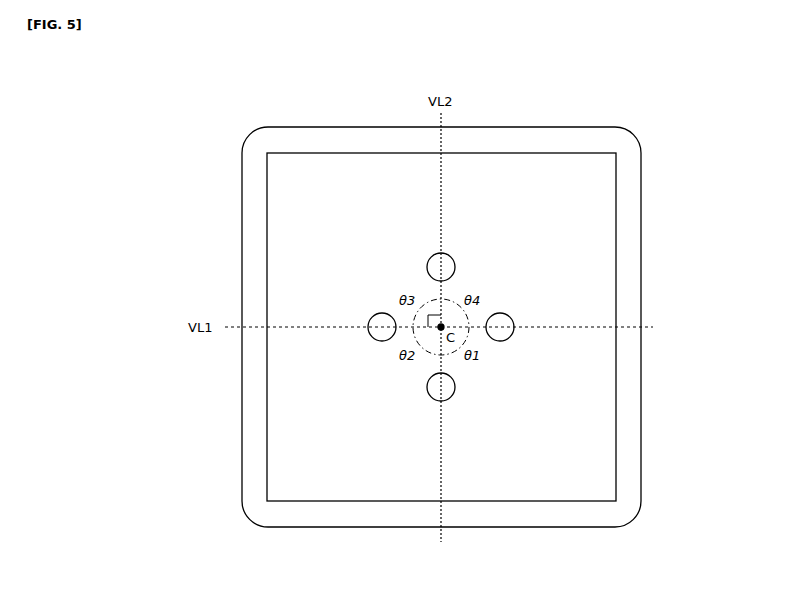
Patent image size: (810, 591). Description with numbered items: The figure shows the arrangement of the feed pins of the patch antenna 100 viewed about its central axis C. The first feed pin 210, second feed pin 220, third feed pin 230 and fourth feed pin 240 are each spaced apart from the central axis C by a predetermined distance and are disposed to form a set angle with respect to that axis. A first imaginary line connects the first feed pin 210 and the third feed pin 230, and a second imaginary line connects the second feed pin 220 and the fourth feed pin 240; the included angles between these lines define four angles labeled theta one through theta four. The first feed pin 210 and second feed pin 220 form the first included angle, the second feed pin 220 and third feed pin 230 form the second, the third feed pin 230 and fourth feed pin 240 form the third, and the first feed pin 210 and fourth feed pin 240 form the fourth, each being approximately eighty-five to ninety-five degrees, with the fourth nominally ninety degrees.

The patch antenna 100 is at (642, 244).
The first feed pin 210 is at (515, 335).
The second feed pin 220 is at (433, 399).
The third feed pin 230 is at (367, 320).
The fourth feed pin 240 is at (452, 255).